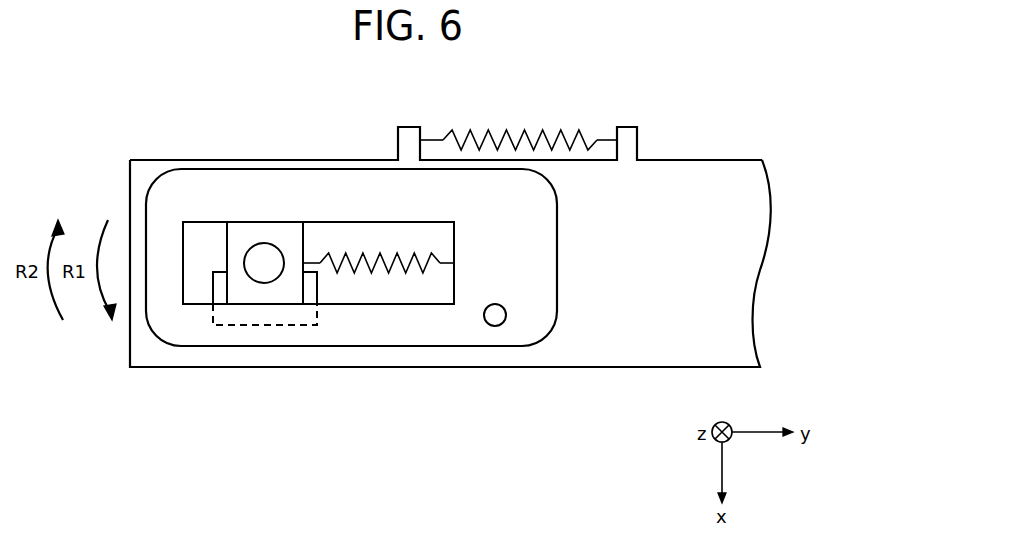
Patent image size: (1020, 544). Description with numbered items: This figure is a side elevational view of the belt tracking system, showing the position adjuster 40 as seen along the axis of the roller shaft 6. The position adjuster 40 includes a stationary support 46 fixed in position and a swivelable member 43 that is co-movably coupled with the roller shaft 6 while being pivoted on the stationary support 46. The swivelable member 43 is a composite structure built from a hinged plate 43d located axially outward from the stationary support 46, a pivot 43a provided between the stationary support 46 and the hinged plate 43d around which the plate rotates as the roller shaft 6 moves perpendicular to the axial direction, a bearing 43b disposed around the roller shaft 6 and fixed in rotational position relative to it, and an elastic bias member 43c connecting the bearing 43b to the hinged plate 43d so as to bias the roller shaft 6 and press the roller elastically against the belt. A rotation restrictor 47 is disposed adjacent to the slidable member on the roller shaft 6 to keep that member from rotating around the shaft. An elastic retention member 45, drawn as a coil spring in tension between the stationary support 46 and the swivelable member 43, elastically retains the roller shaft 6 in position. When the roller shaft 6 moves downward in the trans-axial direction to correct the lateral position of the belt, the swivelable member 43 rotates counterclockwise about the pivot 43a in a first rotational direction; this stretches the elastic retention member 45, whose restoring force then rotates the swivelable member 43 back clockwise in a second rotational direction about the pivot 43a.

The position adjuster 40 is at (532, 406).
The stationary support 46 is at (700, 160).
The elastic retention member 45 is at (525, 130).
The swivelable member 43 is at (495, 415).
The pivot 43a is at (490, 326).
The bearing 43b is at (277, 297).
The elastic bias member 43c is at (387, 272).
The hinged plate 43d is at (437, 337).
The rotation restrictor 47 is at (223, 275).
The roller shaft 6 is at (260, 243).